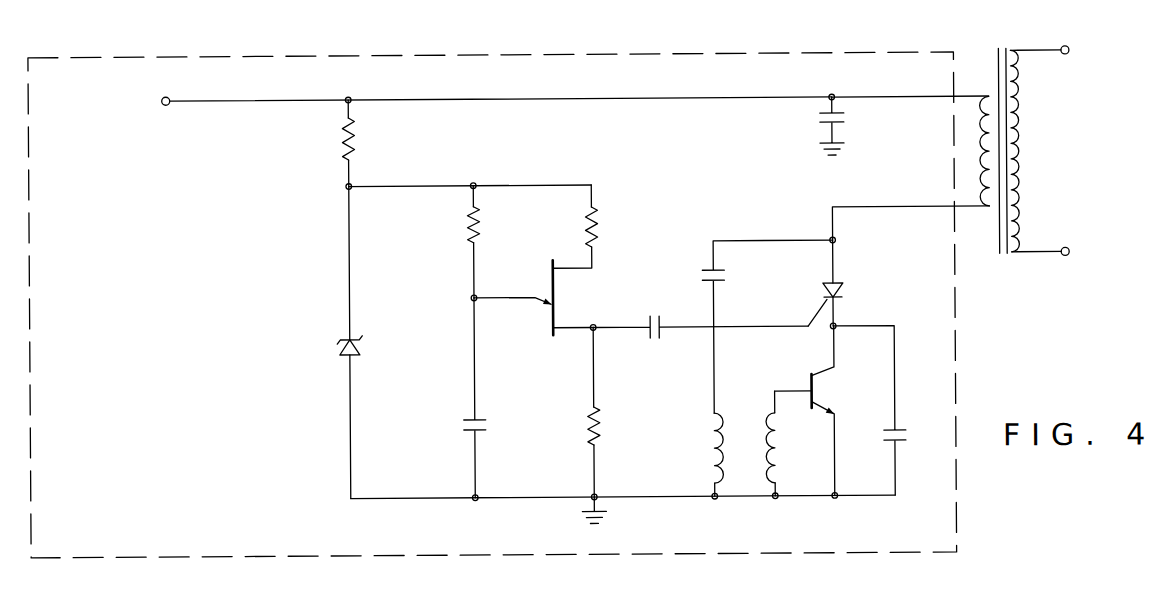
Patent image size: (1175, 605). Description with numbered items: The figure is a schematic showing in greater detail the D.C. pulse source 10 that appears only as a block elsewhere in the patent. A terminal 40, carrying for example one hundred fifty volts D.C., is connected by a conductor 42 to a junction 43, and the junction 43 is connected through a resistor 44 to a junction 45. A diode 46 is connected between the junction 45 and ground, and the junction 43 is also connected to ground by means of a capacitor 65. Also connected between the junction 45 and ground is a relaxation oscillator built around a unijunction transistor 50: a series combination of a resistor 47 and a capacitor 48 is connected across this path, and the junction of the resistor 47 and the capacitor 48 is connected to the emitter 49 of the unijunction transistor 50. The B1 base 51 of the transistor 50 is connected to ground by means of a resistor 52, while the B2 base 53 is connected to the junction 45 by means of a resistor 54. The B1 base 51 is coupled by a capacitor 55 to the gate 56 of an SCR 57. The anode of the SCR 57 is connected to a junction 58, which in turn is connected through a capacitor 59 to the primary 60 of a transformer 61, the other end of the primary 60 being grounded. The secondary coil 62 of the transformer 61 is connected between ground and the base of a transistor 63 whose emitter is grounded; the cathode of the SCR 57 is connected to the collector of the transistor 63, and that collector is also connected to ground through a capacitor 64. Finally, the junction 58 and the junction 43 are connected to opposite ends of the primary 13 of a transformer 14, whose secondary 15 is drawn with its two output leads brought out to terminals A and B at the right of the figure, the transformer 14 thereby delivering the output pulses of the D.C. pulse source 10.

The D.C. pulse source 10 is at (819, 51).
The primary 13 is at (979, 217).
The transformer 14 is at (1002, 47).
The secondary winding 15 is at (1015, 51).
The terminal 40 is at (164, 96).
The conductor 42 is at (265, 97).
The junction 43 is at (355, 97).
The resistor 44 is at (356, 139).
The junction 45 is at (355, 183).
The diode 46 is at (338, 348).
The resistor 47 is at (463, 230).
The capacitor 48 is at (462, 425).
The emitter 49 is at (537, 284).
The unijunction transistor 50 is at (559, 296).
The B1 base 51 is at (564, 338).
The resistor 52 is at (588, 430).
The B2 base 53 is at (572, 260).
The resistor 54 is at (600, 229).
The capacitor 55 is at (654, 314).
The gate 56 is at (816, 310).
The SCR 57 is at (898, 302).
The junction 58 is at (840, 242).
The capacitor 59 is at (727, 279).
The primary 60 is at (708, 438).
The transformer 61 is at (758, 503).
The secondary coil 62 is at (778, 443).
The transistor 63 is at (875, 389).
The capacitor 64 is at (905, 436).
The capacitor 65 is at (850, 122).
The output terminal A is at (1069, 50).
The output terminal B is at (1070, 253).